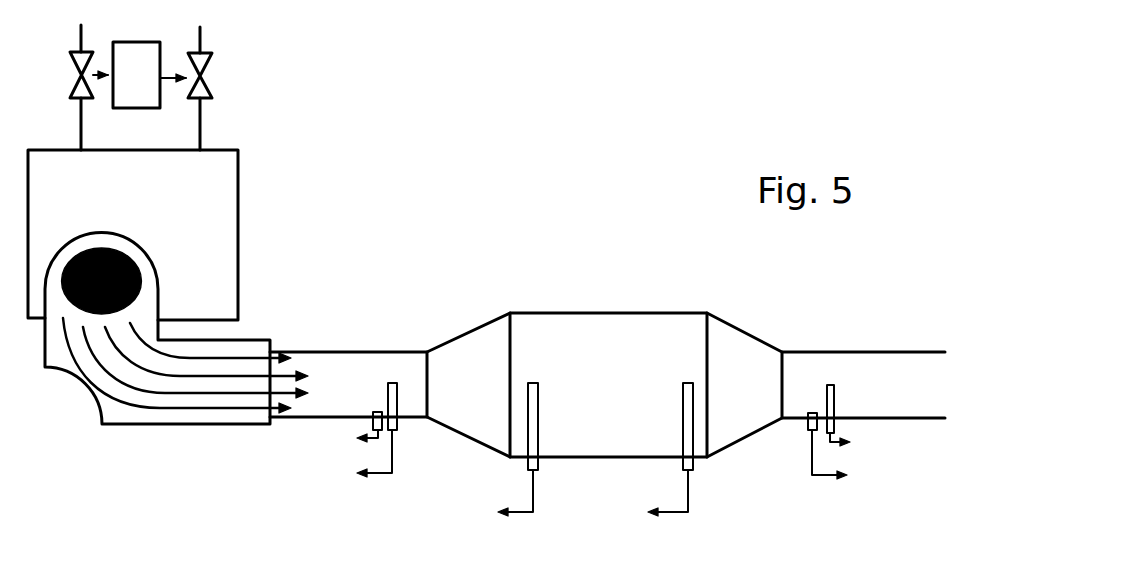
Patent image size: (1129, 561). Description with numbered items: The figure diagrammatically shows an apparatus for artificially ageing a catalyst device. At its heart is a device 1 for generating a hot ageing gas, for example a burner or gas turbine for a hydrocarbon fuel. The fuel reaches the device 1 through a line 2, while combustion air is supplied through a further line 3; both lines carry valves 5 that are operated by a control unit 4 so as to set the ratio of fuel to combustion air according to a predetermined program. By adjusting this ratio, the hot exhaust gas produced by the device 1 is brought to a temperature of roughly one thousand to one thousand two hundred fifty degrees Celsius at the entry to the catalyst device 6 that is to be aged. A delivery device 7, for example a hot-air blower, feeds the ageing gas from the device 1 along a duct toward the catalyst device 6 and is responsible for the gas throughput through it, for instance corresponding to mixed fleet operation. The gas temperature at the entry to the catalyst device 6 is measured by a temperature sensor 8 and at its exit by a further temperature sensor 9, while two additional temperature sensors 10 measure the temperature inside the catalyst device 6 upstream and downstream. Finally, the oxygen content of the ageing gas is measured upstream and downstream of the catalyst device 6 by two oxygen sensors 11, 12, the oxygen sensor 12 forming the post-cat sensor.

The device for generating a hot ageing gas 1 is at (218, 208).
The line 2 is at (202, 121).
The further line 3 is at (80, 125).
The control unit 4 is at (138, 52).
The valves 5 is at (70, 60).
The catalyst device 6 is at (596, 312).
The delivery device 7 is at (151, 424).
The temperature sensor 8 is at (396, 426).
The further temperature sensor 9 is at (834, 405).
The additional temperature sensors 10 is at (535, 440).
The oxygen sensor 11 is at (372, 426).
The oxygen sensor 12 is at (808, 425).